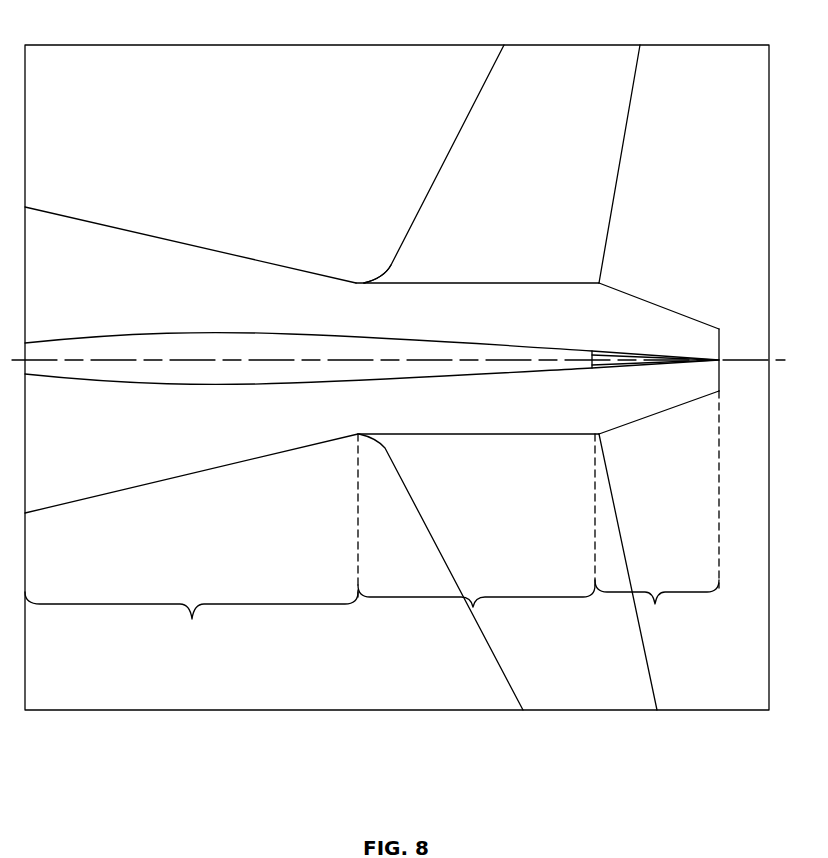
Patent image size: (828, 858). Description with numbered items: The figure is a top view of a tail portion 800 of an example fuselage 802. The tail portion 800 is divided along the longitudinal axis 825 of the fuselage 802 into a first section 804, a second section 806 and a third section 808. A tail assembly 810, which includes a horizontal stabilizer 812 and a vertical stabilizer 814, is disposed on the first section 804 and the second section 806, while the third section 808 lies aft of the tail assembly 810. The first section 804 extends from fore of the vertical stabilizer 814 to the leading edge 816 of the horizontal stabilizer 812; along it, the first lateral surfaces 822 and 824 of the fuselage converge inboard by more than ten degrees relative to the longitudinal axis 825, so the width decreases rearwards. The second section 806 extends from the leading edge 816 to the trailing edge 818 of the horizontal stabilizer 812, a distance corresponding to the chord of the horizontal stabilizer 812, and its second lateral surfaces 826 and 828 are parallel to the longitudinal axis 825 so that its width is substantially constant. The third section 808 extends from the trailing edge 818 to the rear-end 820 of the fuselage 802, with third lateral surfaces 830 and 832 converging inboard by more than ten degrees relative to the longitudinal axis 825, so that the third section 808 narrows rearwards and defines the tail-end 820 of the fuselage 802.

The tail portion 800 is at (124, 66).
The fuselage 802 is at (114, 276).
The first section 804 is at (197, 623).
The second section 806 is at (477, 606).
The third section 808 is at (657, 602).
The tail assembly 810 is at (420, 143).
The horizontal stabilizer 812 is at (599, 143).
The vertical stabilizer 814 is at (223, 343).
The leading edge 816 is at (387, 266).
The trailing edge 818 is at (607, 238).
The rear-end 820 is at (720, 336).
The first lateral surface 822 is at (190, 243).
The first lateral surface 824 is at (183, 479).
The longitudinal axis 825 is at (62, 362).
The second lateral surface 826 is at (524, 287).
The second lateral surface 828 is at (562, 433).
The third lateral surface 830 is at (700, 320).
The third lateral surface 832 is at (707, 398).